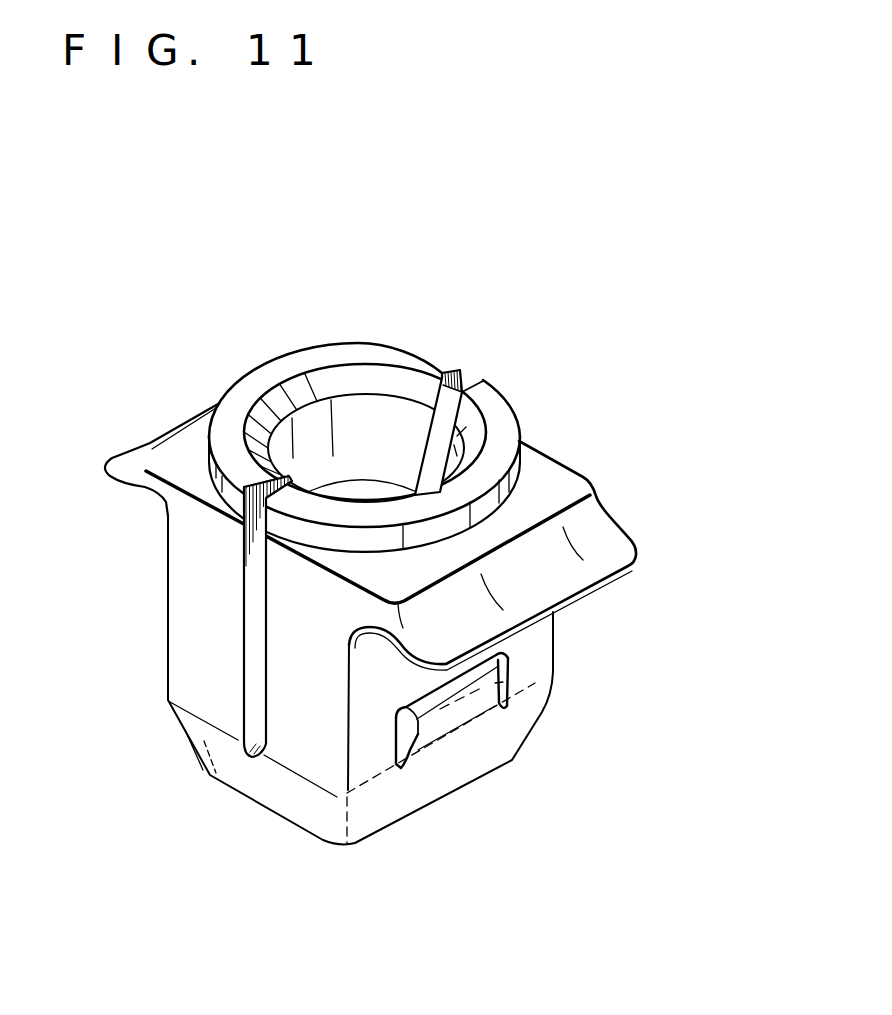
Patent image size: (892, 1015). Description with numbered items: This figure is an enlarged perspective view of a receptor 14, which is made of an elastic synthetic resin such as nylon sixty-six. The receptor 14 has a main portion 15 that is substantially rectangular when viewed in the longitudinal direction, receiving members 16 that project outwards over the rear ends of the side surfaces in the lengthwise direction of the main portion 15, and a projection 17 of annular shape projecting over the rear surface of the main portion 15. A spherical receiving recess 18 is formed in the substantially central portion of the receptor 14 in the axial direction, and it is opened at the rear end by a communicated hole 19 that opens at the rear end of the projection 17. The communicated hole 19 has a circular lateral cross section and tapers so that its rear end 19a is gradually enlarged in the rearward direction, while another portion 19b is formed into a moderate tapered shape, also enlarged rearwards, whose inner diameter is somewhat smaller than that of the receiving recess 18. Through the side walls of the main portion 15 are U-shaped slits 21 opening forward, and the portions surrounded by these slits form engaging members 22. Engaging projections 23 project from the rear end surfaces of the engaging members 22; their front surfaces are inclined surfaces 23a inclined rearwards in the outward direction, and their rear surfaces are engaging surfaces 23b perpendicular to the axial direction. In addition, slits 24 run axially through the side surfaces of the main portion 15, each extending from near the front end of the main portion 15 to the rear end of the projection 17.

The receptor 14 is at (600, 238).
The main portion 15 is at (193, 610).
The receiving members 16 is at (128, 455).
The projection 17 is at (278, 364).
The receiving recess 18 is at (347, 490).
The communicated hole 19 is at (372, 424).
The rear end of the communicated hole 19a is at (362, 378).
The portion of the communicated hole 19b is at (390, 444).
The U-shaped slits 21 is at (410, 750).
The engaging members 22 is at (430, 720).
The engaging projections 23 is at (513, 677).
The inclined surfaces 23a is at (467, 720).
The engaging surfaces 23b is at (505, 658).
The slits 24 is at (468, 372).